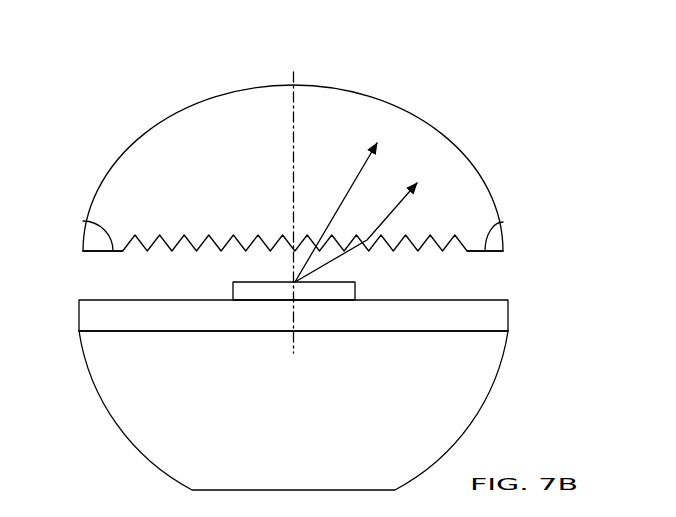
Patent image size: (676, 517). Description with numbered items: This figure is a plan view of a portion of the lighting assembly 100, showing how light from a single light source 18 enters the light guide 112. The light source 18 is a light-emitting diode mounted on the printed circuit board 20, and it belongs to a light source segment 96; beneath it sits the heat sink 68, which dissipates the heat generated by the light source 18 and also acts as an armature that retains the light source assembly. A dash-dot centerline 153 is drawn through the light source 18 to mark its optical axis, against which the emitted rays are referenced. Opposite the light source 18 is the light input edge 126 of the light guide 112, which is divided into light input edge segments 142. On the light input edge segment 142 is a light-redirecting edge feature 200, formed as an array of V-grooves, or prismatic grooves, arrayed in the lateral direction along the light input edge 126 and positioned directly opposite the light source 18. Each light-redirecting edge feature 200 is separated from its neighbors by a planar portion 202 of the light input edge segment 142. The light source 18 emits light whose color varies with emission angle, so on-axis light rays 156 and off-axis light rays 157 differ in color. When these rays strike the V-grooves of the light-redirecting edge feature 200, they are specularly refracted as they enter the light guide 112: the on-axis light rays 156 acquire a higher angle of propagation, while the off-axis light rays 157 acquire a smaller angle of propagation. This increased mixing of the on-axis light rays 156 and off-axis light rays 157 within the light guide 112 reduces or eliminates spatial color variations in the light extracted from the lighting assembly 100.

The lighting assembly 100 is at (225, 50).
The light guide 112 is at (450, 153).
The optical axis 153 is at (294, 72).
The on-axis light rays 156 is at (353, 175).
The off-axis light rays 157 is at (397, 197).
The light-redirecting edge features 200 is at (463, 233).
The planar portion 202 is at (87, 221).
The light input edge segment 142 is at (99, 253).
The light input edge 126 is at (492, 252).
The light source 18 is at (328, 293).
The printed circuit board 20 is at (385, 317).
The light source segment 96 is at (206, 318).
The heat sink 68 is at (472, 385).